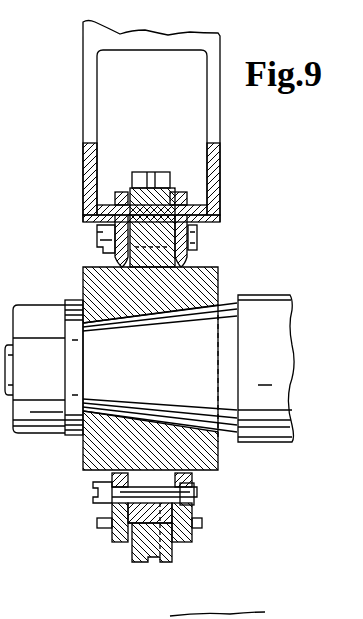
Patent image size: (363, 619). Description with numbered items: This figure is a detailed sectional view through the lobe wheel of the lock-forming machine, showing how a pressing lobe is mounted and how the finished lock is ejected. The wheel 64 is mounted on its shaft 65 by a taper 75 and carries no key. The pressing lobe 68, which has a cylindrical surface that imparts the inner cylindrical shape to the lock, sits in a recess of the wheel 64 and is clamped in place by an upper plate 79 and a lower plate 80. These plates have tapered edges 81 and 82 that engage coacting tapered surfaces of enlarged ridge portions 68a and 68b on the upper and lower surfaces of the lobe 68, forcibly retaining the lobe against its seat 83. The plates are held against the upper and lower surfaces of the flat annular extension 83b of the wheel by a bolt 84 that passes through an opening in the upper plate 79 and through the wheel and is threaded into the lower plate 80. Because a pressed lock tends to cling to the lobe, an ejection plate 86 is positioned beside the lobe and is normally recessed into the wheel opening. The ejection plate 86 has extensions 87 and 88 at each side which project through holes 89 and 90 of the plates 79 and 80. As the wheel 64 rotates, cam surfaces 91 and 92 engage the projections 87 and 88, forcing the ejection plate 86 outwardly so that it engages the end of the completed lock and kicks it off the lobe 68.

The wheel 64 is at (222, 270).
The shaft 65 is at (265, 310).
The taper 75 is at (75, 300).
The ejection plate 86 is at (152, 188).
The extension 87 is at (212, 207).
The extension 88 is at (100, 210).
The hole 89 is at (182, 192).
The hole 90 is at (113, 192).
The cam surface 91 is at (195, 230).
The cam surface 92 is at (97, 232).
The bolt 84 is at (93, 487).
The seat 83 is at (192, 492).
The flat annular extension 83b is at (192, 478).
The upper plate 79 is at (97, 520).
The pressing lobe 68 is at (170, 562).
The enlarged ridge portion 68a is at (112, 528).
The enlarged ridge portion 68b is at (202, 522).
The lower plate 80 is at (195, 505).
The tapered edge 81 is at (135, 520).
The tapered edge 82 is at (192, 540).